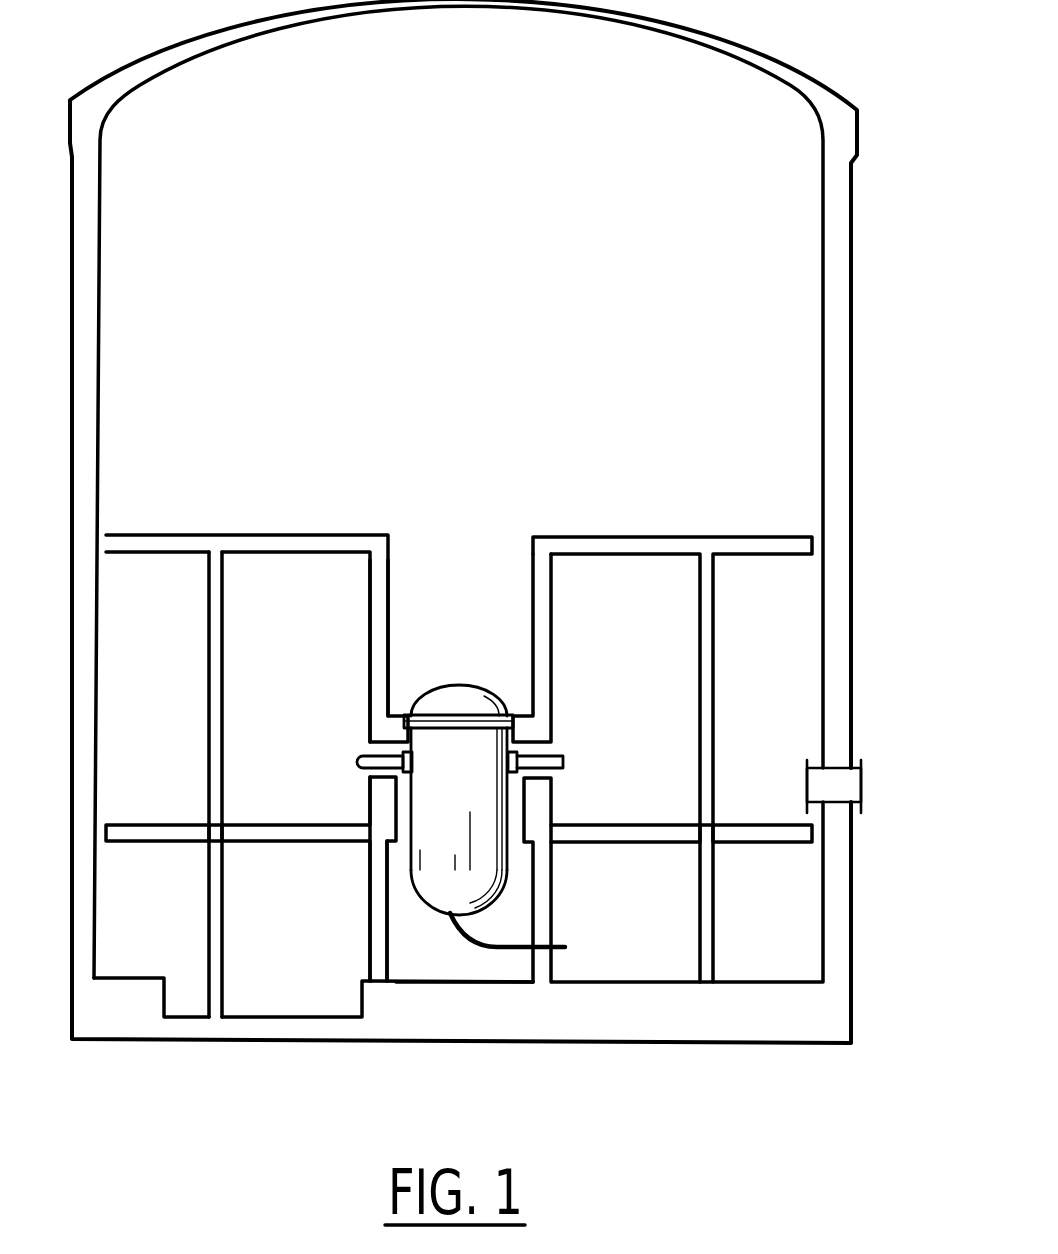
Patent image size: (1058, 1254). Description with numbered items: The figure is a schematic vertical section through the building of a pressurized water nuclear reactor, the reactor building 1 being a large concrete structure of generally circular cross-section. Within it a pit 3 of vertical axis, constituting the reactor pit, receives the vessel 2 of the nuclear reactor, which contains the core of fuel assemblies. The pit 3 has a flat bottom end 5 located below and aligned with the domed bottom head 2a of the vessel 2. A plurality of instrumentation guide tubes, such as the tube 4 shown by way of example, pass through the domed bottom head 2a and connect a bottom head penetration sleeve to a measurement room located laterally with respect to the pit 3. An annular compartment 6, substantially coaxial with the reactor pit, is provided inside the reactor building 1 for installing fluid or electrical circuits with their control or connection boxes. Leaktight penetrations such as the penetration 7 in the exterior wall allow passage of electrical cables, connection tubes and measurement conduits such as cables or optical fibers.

The reactor building 1 is at (855, 370).
The vessel 2 is at (433, 806).
The domed bottom head 2a is at (504, 893).
The pit 3 is at (389, 905).
The instrumentation guide tube 4 is at (498, 949).
The flat bottom end 5 is at (406, 972).
The annular compartment 6 is at (782, 698).
The penetration 7 is at (861, 787).